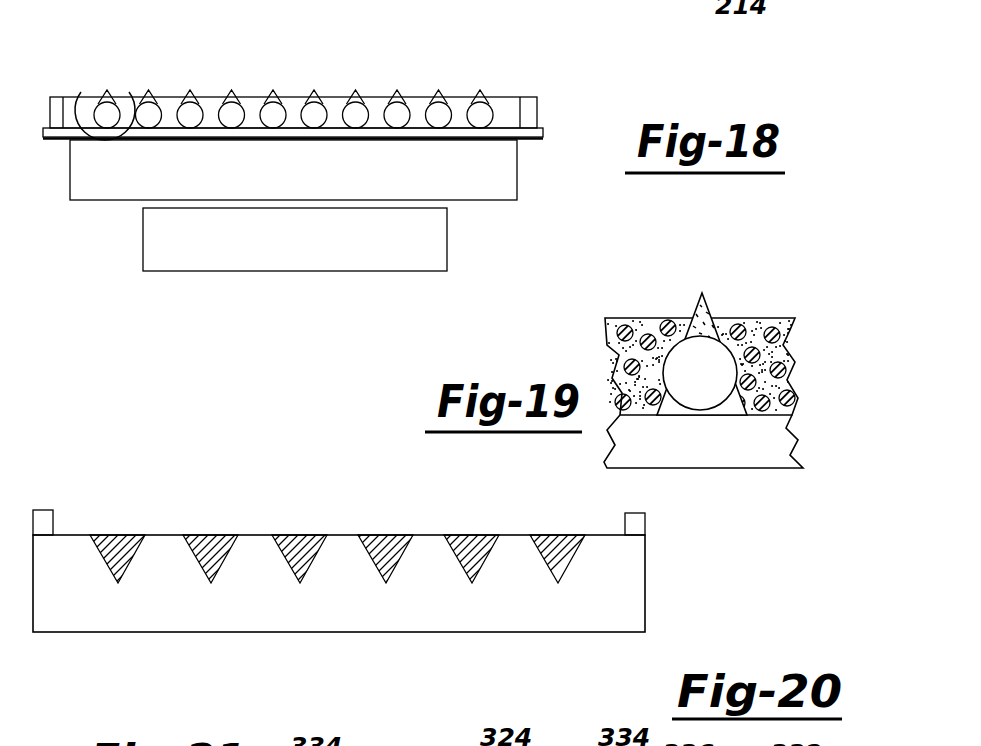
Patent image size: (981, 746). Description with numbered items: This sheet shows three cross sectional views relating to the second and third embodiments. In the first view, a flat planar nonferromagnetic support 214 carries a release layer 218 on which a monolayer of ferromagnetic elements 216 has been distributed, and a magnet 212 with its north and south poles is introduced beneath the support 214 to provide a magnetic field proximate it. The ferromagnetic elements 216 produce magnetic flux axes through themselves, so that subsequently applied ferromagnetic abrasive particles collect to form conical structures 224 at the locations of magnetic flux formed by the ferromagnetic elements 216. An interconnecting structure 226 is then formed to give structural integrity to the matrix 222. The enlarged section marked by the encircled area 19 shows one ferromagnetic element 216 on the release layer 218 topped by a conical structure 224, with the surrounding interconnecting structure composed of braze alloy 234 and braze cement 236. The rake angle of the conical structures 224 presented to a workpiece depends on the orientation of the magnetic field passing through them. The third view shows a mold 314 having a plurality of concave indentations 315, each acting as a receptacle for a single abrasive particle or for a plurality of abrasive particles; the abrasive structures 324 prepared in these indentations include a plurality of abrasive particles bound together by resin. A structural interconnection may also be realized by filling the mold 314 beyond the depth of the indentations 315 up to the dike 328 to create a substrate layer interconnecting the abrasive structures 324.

In FIG. 18, the detail area shown in FIG. 19 is at (126, 89).
In FIG. 18, the magnet 212 is at (447, 240).
In FIG. 18, the flat planar nonferromagnetic support 214 is at (517, 168).
In FIG. 18, the ferromagnetic elements 216 is at (192, 110).
In FIG. 19, the ferromagnetic elements 216 is at (722, 386).
In FIG. 18, the release layer 218 is at (541, 132).
In FIG. 19, the release layer 218 is at (781, 462).
In FIG. 18, the matrix 222 is at (548, 8).
In FIG. 18, the conical structures 224 is at (274, 100).
In FIG. 19, the conical structures 224 is at (720, 294).
In FIG. 18, the interconnecting structure 226 is at (374, 103).
In FIG. 19, the braze alloy 234 is at (627, 327).
In FIG. 19, the braze cement 236 is at (760, 318).
In FIG. 20, the mold 314 is at (637, 613).
In FIG. 20, the concave indentations 315 is at (128, 565).
In FIG. 20, the abrasive structures 324 is at (115, 540).
In FIG. 20, the dike 328 is at (637, 528).